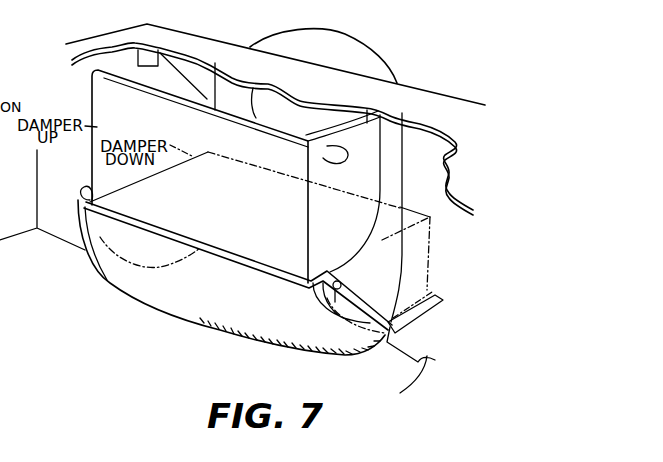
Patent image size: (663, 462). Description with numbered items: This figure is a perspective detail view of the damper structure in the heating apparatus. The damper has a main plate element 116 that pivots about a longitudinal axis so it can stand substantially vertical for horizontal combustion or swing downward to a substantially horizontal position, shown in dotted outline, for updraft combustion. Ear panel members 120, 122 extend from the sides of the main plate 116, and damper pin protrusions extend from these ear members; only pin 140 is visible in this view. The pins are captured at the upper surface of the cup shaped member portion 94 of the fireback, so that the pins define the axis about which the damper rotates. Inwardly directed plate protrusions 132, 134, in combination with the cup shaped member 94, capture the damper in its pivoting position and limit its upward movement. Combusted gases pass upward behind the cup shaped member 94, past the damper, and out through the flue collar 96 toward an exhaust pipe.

The cup shaped member portion 94 is at (186, 297).
The flue collar 96 is at (328, 50).
The main plate element 116 is at (258, 213).
The ear panel member 120 is at (112, 50).
The ear panel member 122 is at (307, 155).
The inwardly directed plate protrusion 132 is at (84, 185).
The inwardly directed plate protrusion 134 is at (393, 261).
The damper pin 140 is at (313, 310).